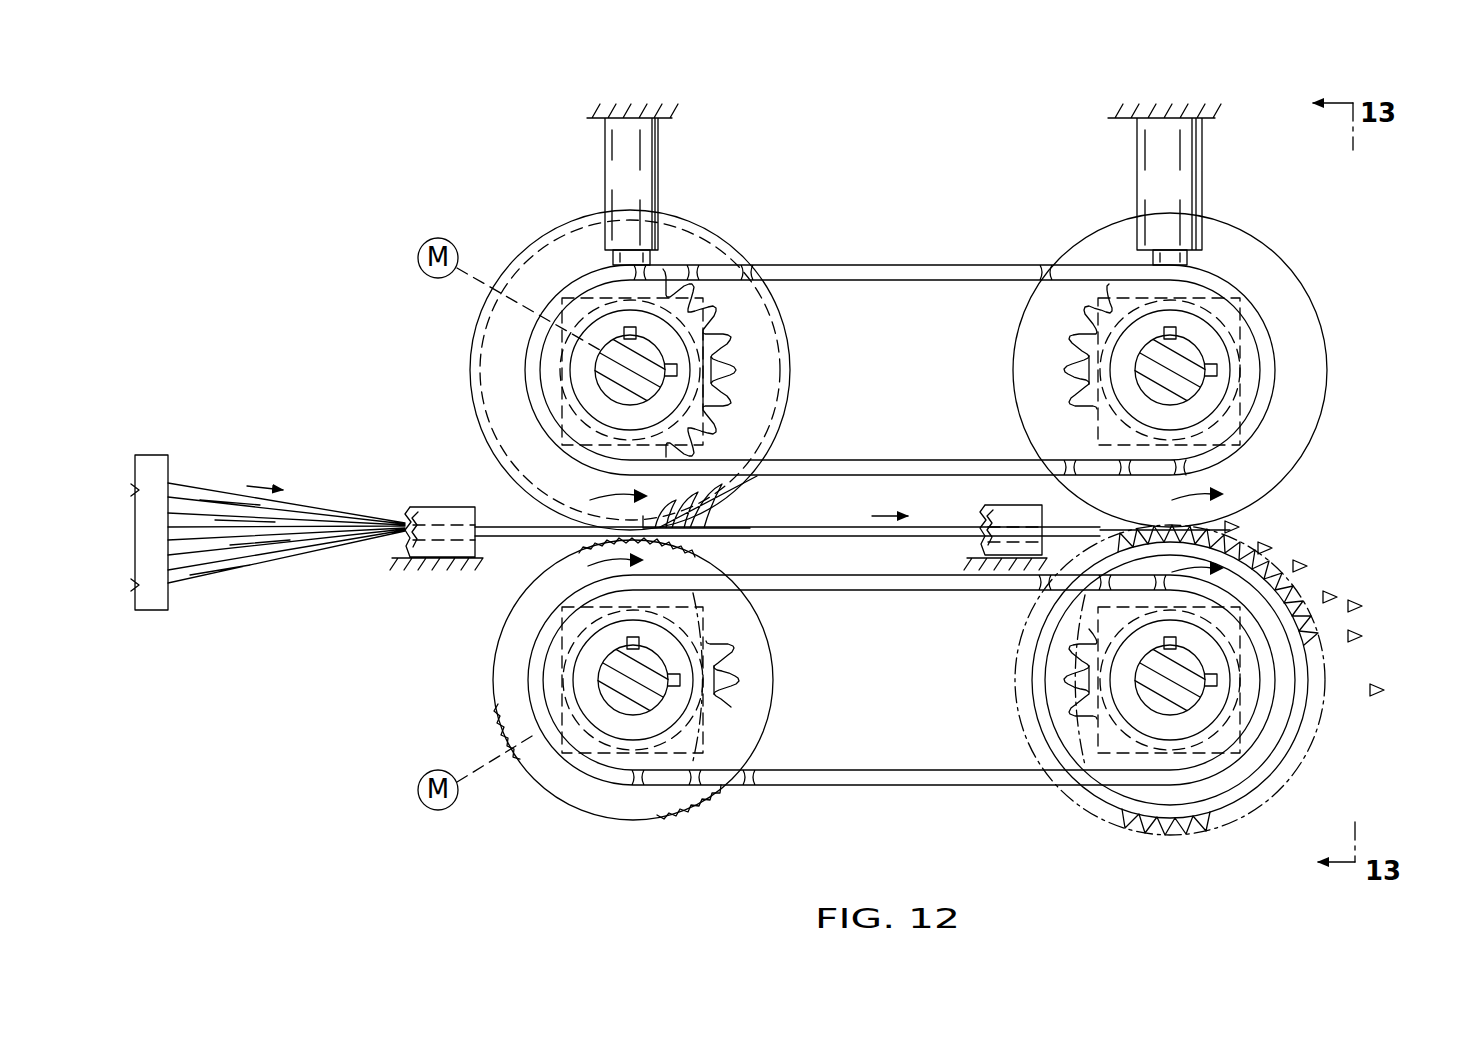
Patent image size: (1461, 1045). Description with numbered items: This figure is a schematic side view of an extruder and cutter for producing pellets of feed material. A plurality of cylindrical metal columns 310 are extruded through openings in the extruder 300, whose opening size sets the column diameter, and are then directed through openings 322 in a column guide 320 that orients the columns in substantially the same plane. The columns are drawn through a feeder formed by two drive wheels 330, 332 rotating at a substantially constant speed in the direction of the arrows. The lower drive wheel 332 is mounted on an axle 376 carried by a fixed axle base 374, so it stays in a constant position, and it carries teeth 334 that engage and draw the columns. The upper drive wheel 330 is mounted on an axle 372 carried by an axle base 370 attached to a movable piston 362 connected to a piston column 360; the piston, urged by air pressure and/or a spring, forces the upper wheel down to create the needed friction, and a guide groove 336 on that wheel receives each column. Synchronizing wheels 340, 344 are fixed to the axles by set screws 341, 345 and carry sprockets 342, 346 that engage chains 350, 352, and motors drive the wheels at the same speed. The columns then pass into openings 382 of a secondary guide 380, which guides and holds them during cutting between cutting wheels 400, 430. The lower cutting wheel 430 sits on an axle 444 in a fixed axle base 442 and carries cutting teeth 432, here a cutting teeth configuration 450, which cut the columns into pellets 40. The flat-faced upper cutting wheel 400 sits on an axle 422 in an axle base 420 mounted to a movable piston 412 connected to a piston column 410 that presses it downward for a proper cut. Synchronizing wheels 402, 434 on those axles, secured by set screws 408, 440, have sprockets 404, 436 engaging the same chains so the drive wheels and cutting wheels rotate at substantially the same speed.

The extruder 300 is at (152, 462).
The metal columns 310 is at (230, 523).
The column guide 320 is at (440, 507).
The openings 322 is at (417, 547).
The drive wheel 330 is at (468, 353).
The drive wheel 332 is at (492, 668).
The teeth 334 is at (498, 720).
The guide groove 336 is at (478, 320).
The synchronizing wheel 340 is at (740, 336).
The set screw 341 is at (745, 387).
The sprockets 342 is at (738, 369).
The synchronizing wheel 344 is at (732, 668).
The set screw 345 is at (733, 648).
The sprockets 346 is at (738, 682).
The chain 350 is at (807, 271).
The chain 352 is at (912, 780).
The piston column 360 is at (641, 156).
The movable piston 362 is at (651, 258).
The axle base 370 is at (562, 372).
The axle 372 is at (612, 397).
The axle base 374 is at (583, 632).
The axle 376 is at (627, 700).
The secondary guide 380 is at (1000, 507).
The openings 382 is at (966, 560).
The cutting wheel 400 is at (1287, 290).
The synchronizing wheel 402 is at (1076, 358).
The sprockets 404 is at (1080, 332).
The set screw 408 is at (1217, 368).
The piston column 410 is at (1192, 173).
The movable piston 412 is at (1190, 257).
The axle base 420 is at (1237, 323).
The axle 422 is at (1142, 366).
The cutting wheel 430 is at (1307, 582).
The teeth 432 is at (1288, 580).
The synchronizing wheel 434 is at (1065, 678).
The sprockets 436 is at (1072, 650).
The set screw 440 is at (1217, 678).
The axle base 442 is at (1302, 762).
The axle 444 is at (1143, 687).
The cutting teeth configuration 450 is at (1220, 517).
The pellets 40 is at (1363, 610).